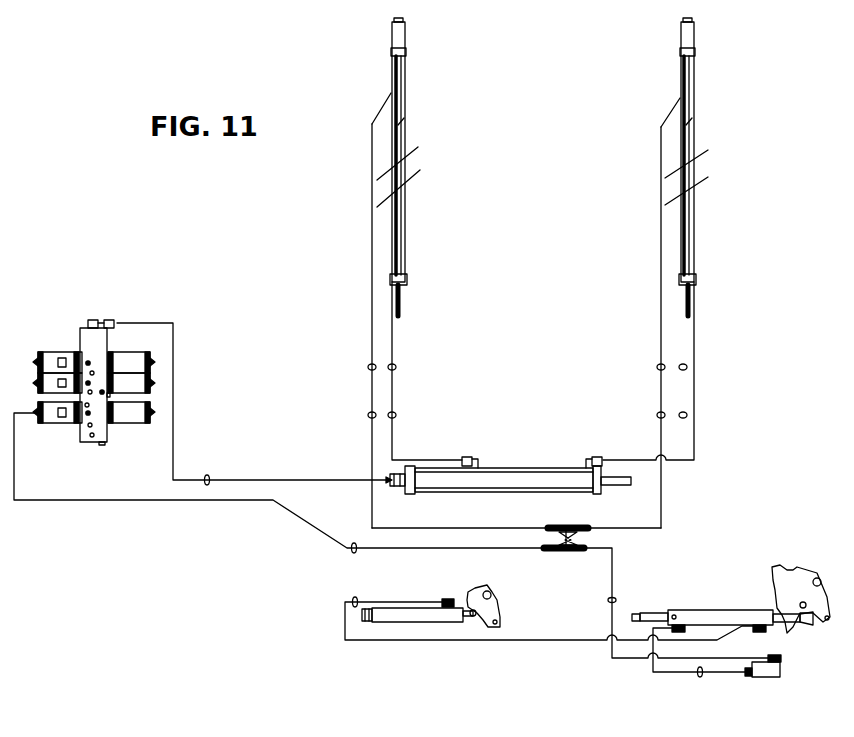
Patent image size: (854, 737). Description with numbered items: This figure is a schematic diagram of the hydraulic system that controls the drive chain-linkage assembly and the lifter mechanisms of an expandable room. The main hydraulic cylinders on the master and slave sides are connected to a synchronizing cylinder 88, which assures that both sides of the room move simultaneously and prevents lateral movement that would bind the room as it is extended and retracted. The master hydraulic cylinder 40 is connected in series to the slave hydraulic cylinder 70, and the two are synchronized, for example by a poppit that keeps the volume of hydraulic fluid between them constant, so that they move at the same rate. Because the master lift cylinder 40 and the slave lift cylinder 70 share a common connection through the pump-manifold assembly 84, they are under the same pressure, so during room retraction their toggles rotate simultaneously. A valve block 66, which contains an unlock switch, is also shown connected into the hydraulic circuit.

The master hydraulic cylinder 40 is at (738, 612).
The valve block 66 is at (780, 672).
The slave hydraulic cylinder 70 is at (402, 616).
The pump-manifold assembly 84 is at (157, 370).
The synchronizing cylinder 88 is at (510, 482).